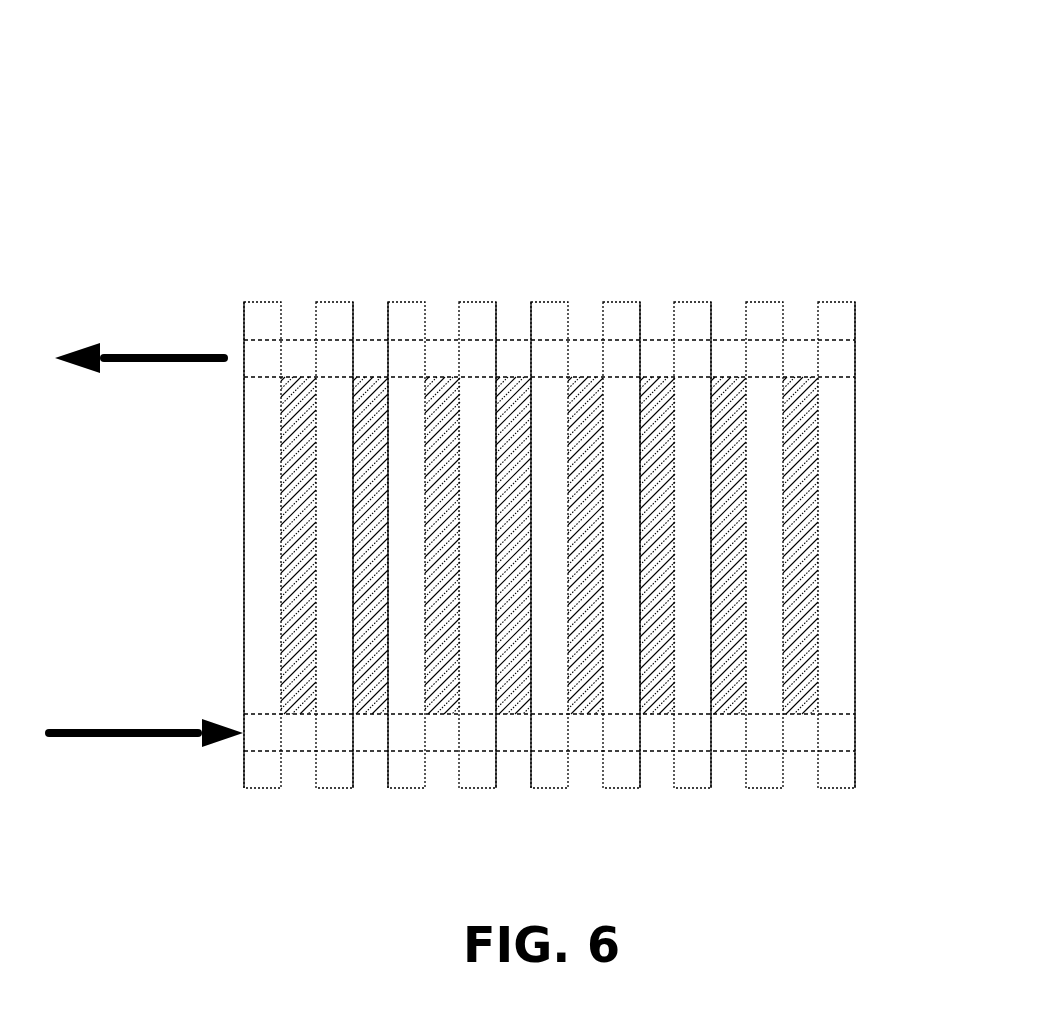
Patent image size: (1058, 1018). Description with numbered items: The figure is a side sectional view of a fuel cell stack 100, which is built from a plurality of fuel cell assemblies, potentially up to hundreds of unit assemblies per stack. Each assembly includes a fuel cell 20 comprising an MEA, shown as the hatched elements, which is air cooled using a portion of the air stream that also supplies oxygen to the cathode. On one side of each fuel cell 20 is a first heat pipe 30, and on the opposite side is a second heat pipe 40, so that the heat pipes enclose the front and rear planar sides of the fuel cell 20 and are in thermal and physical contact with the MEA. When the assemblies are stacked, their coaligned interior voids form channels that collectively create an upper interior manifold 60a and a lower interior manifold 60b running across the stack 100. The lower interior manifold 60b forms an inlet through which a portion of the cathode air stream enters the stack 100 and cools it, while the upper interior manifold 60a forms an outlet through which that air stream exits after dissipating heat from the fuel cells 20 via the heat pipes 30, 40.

The fuel cell stack 100 is at (186, 105).
The fuel cell 20 is at (370, 377).
The first heat pipe 30 is at (765, 302).
The second heat pipe 40 is at (837, 302).
The upper interior manifold 60a is at (262, 358).
The lower interior manifold 60b is at (833, 732).